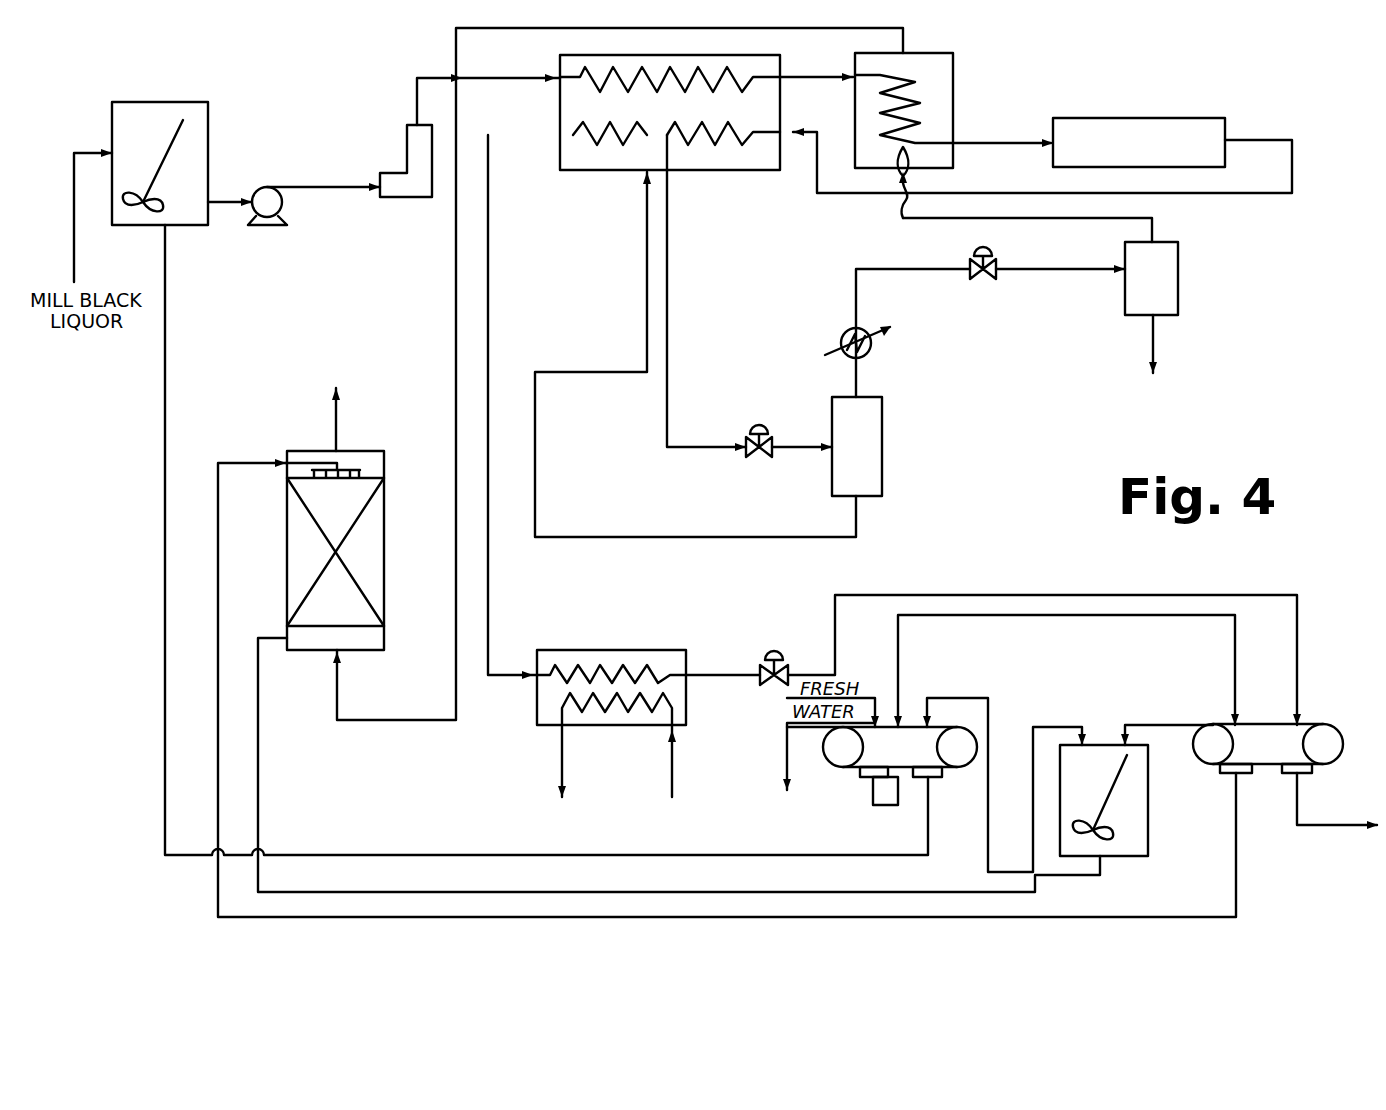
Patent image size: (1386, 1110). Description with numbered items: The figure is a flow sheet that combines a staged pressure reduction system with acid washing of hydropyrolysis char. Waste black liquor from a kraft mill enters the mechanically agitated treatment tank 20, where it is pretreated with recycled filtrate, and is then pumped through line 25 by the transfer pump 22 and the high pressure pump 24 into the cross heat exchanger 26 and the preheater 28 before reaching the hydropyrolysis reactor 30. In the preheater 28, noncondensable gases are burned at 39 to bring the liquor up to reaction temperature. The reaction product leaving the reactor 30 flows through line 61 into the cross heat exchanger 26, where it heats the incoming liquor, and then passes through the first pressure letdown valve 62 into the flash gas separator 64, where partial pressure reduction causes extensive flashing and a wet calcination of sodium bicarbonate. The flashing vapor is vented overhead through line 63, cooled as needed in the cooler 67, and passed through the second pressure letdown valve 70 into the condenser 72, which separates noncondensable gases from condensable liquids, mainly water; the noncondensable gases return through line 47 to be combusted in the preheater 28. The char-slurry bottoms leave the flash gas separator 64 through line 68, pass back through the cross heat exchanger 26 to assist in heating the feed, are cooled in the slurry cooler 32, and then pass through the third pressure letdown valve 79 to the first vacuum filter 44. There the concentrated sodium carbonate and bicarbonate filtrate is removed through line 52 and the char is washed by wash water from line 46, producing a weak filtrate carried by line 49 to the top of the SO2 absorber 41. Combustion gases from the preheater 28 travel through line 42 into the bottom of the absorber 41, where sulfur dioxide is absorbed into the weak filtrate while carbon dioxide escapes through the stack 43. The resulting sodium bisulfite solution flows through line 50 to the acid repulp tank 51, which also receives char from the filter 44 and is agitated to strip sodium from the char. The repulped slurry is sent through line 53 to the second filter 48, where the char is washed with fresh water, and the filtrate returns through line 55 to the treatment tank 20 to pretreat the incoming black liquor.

The treatment tank 20 is at (111, 110).
The transfer pump 22 is at (258, 191).
The high pressure pump 24 is at (396, 175).
The black liquor line 25 is at (415, 91).
The cross heat exchanger 26 is at (557, 63).
The preheater 28 is at (856, 59).
The hydropyrolysis reactor 30 is at (1115, 118).
The slurry cooler 32 is at (605, 650).
The combustion point 39 is at (900, 178).
The SO2 absorber 41 is at (384, 548).
The combustion gas line 42 is at (626, 30).
The stack 43 is at (336, 432).
The first vacuum filter 44 is at (1311, 724).
The wash water line 46 is at (1050, 615).
The noncondensable gas line 47 is at (1152, 232).
The second filter 48 is at (836, 767).
The weak filtrate line 49 is at (1236, 879).
The SO2-treated filtrate line 50 is at (258, 760).
The acid repulp tank 51 is at (1148, 806).
The filtrate line 52 is at (1298, 805).
The char-slurry transfer line 53 is at (990, 710).
The filtrate return line 55 is at (700, 851).
The reaction product line 61 is at (1251, 193).
The first pressure letdown valve 62 is at (758, 458).
The vapor vent line 63 is at (856, 382).
The flash gas separator 64 is at (882, 449).
The cooler 67 is at (848, 332).
The bottoms line 68 is at (856, 520).
The second pressure letdown valve 70 is at (986, 282).
The condenser 72 is at (1178, 282).
The third pressure letdown valve 79 is at (769, 686).